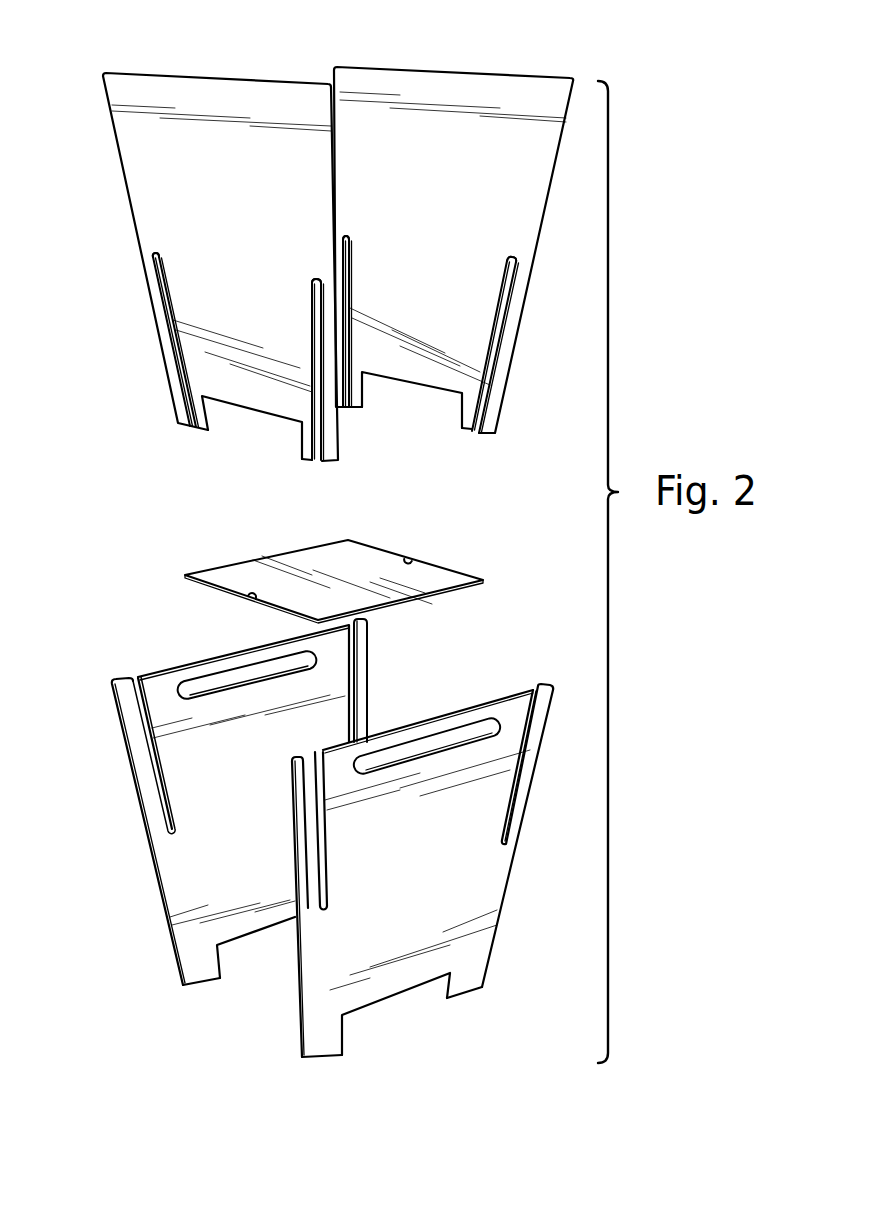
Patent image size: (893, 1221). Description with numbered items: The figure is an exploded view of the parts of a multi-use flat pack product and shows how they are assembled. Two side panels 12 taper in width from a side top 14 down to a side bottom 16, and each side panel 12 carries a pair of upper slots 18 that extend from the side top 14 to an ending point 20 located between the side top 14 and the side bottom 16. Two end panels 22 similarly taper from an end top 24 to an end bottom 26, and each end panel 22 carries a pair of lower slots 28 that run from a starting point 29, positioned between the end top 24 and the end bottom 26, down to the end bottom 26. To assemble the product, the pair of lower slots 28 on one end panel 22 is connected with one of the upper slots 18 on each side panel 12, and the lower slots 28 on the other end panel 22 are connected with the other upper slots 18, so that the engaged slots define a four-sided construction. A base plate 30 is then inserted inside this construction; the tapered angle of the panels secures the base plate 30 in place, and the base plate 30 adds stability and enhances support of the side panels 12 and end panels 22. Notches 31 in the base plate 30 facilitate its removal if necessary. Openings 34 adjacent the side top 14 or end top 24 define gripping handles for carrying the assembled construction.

The side panel 12 is at (190, 890).
The side top 14 is at (510, 692).
The side bottom 16 is at (390, 1040).
The upper slot 18 is at (138, 675).
The ending point 20 is at (168, 834).
The end panel 22 is at (138, 138).
The end top 24 is at (470, 68).
The end bottom 26 is at (331, 480).
The lower slot 28 is at (172, 356).
The starting point 29 is at (155, 254).
The base plate 30 is at (447, 582).
The notch 31 is at (251, 593).
The opening 34 is at (196, 683).